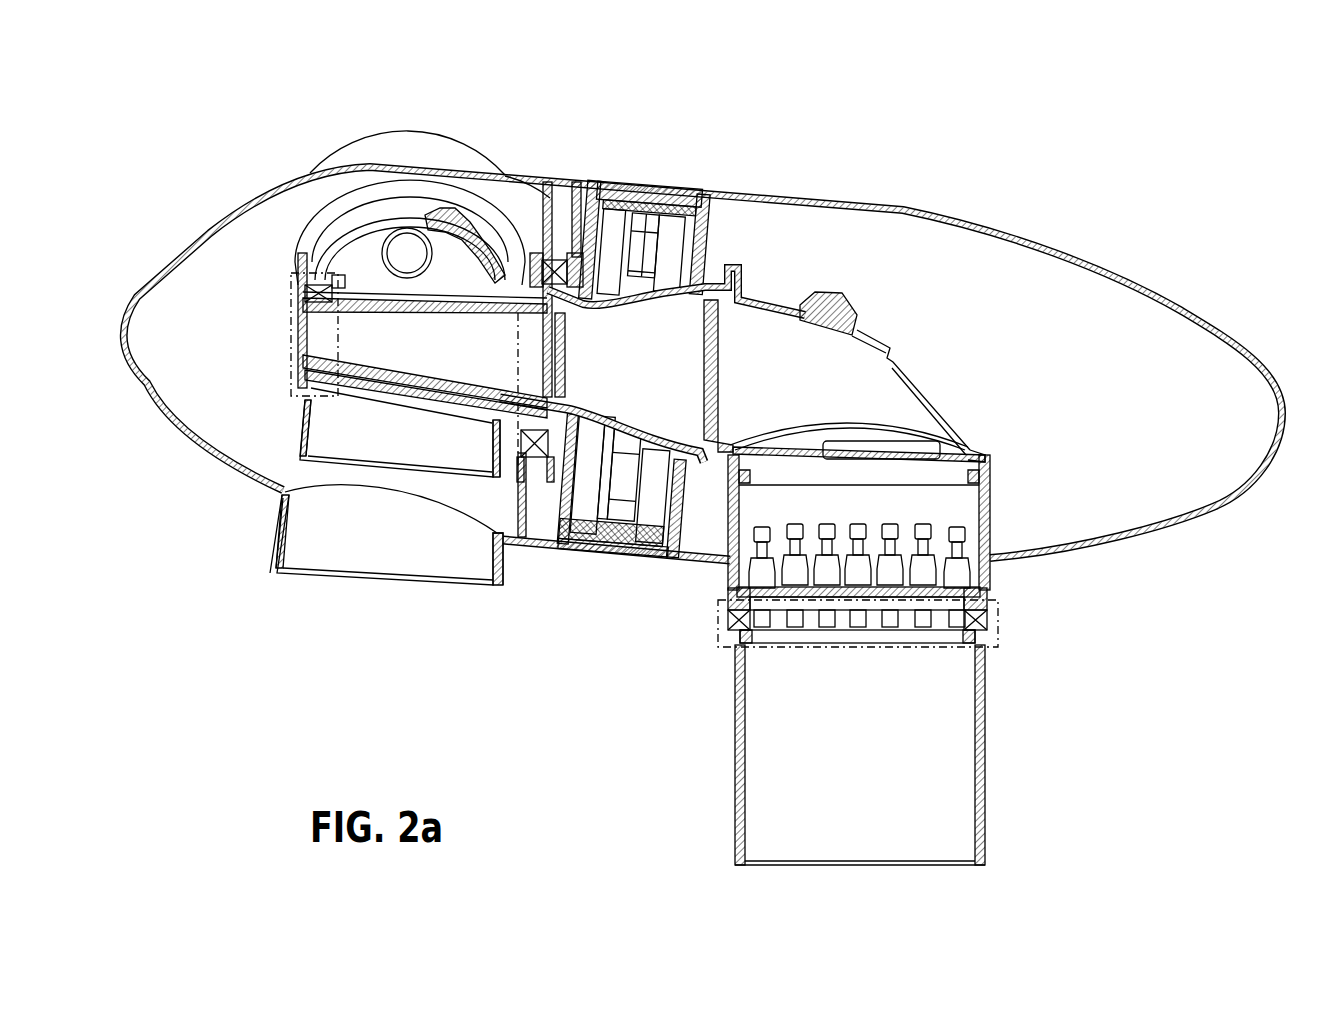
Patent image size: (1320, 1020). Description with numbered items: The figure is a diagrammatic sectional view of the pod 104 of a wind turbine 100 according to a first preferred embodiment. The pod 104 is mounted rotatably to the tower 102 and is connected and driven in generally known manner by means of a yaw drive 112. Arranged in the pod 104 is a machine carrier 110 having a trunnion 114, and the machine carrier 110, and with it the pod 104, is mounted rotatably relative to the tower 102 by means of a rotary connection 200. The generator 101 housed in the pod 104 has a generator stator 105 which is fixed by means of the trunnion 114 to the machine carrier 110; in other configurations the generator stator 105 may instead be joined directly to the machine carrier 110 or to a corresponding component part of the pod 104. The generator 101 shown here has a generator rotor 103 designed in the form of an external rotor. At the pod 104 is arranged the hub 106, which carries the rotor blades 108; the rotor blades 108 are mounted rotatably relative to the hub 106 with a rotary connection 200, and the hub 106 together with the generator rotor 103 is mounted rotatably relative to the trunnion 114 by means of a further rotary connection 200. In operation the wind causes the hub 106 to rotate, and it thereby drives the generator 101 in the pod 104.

The wind turbine 100 is at (1152, 239).
The generator 101 is at (706, 163).
The tower 102 is at (985, 760).
The generator rotor 103 is at (623, 250).
The pod 104 is at (987, 228).
The generator stator 105 is at (647, 243).
The hub 106 is at (178, 447).
The rotor blades 108 is at (413, 128).
The machine carrier 110 is at (833, 312).
The yaw drive 112 is at (965, 568).
The trunnion 114 is at (668, 293).
The rotary connection 200 is at (560, 242).